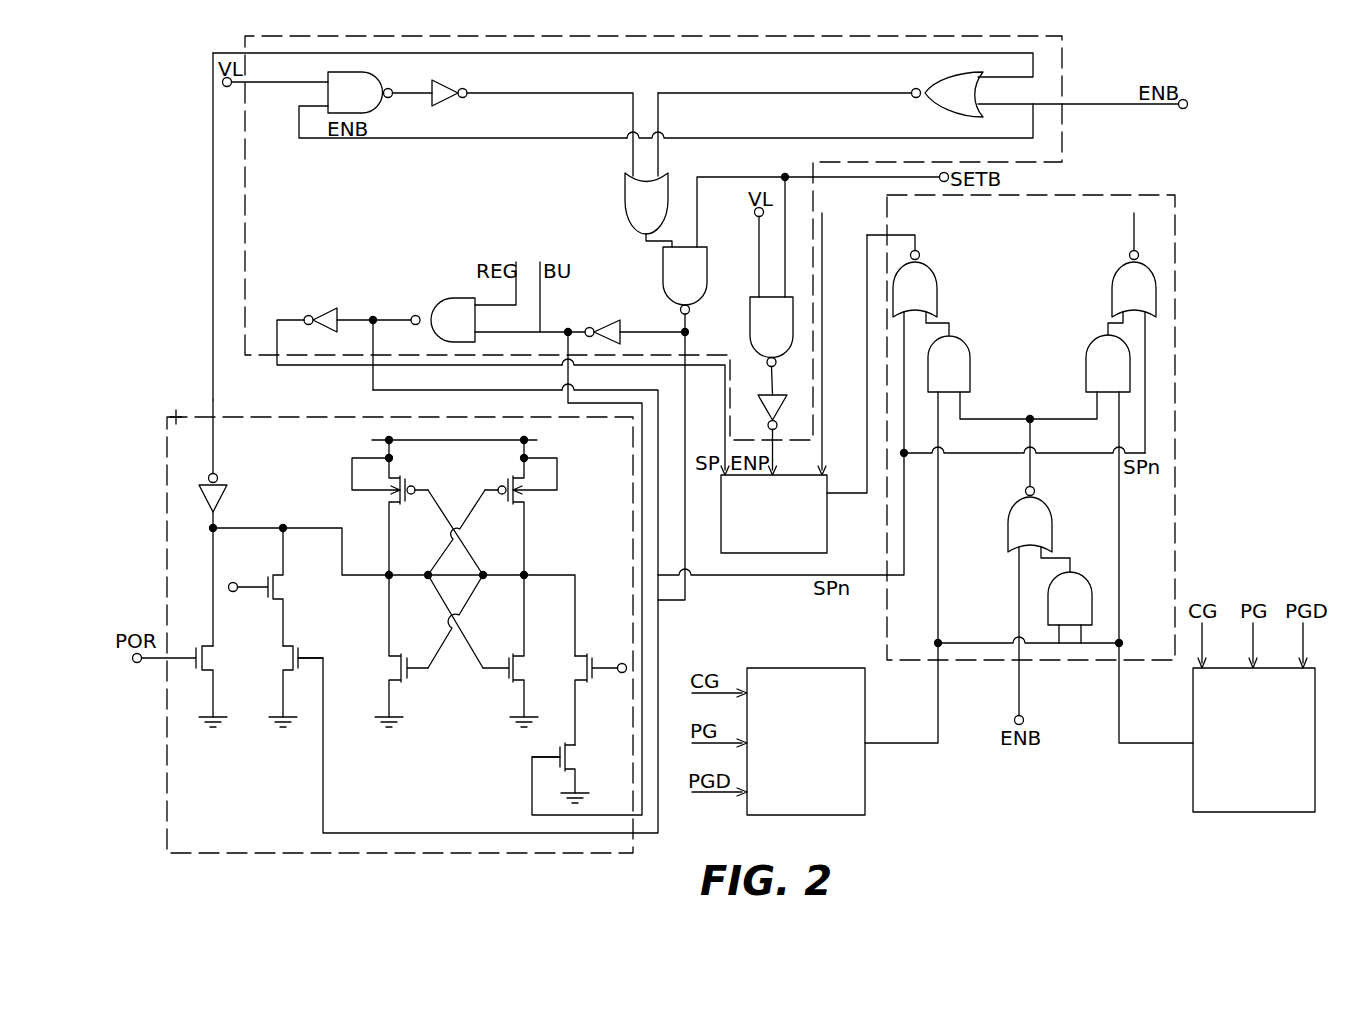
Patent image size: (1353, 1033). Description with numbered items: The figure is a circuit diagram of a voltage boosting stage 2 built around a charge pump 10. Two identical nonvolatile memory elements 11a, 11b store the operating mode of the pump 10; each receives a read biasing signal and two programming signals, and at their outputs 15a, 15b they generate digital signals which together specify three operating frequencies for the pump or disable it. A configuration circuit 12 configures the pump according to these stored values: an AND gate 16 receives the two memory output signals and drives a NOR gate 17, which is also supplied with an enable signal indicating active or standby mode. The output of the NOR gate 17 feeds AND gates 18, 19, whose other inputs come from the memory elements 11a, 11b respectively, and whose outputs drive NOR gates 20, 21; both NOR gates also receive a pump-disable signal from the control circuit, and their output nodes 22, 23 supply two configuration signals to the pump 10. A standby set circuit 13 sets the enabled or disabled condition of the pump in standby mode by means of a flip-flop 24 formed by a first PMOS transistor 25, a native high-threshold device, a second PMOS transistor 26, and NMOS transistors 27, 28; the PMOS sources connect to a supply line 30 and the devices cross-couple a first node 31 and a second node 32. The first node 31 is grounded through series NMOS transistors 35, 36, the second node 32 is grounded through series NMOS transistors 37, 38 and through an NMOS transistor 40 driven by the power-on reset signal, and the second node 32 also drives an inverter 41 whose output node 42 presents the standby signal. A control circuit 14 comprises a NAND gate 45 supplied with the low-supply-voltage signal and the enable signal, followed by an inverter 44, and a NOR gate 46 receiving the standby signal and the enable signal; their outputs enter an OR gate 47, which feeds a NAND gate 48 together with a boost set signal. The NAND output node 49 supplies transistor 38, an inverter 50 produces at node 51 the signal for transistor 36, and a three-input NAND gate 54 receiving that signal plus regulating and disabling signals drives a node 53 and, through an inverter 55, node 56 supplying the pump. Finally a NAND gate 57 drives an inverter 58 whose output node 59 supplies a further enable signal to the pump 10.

The voltage boosting stage 2 is at (1234, 159).
The charge pump 10 is at (826, 542).
The nonvolatile memory element 11a is at (862, 798).
The nonvolatile memory element 11b is at (1304, 813).
The configuration circuit 12 is at (1160, 380).
The standby set circuit 13 is at (173, 410).
The control circuit 14 is at (1050, 137).
The output of memory element 15a is at (938, 718).
The output of memory element 15b is at (1172, 745).
The AND gate 16 is at (1082, 591).
The NOR gate 17 is at (1042, 530).
The AND gate 18 is at (966, 371).
The AND gate 19 is at (1090, 371).
The NOR gate 20 is at (928, 291).
The NOR gate 21 is at (1118, 291).
The node 22 is at (922, 246).
The node 23 is at (1143, 226).
The flip-flop 24 is at (577, 484).
The first PMOS transistor 25 is at (390, 508).
The second PMOS transistor 26 is at (524, 513).
The NMOS transistor 27 is at (388, 670).
The NMOS transistor 28 is at (525, 670).
The supply line 30 is at (451, 442).
The first node 31 is at (526, 576).
The second node 32 is at (384, 573).
The NMOS transistor 35 is at (580, 683).
The NMOS transistor 36 is at (569, 758).
The NMOS transistor 37 is at (280, 600).
The NMOS transistor 38 is at (290, 660).
The NMOS transistor 40 is at (206, 644).
The inverter 41 is at (215, 503).
The node 42 is at (213, 417).
The inverter 44 is at (441, 93).
The NAND gate 45 is at (372, 84).
The NOR gate 46 is at (921, 92).
The OR gate 47 is at (624, 189).
The NAND gate 48 is at (664, 268).
The node 49 is at (686, 332).
The inverter 50 is at (612, 328).
The node 51 is at (566, 335).
The node 53 is at (362, 314).
The three-input NAND gate 54 is at (426, 302).
The inverter 55 is at (314, 313).
The node 56 is at (272, 355).
The NAND gate 57 is at (745, 301).
The inverter 58 is at (760, 400).
The node 59 is at (774, 440).